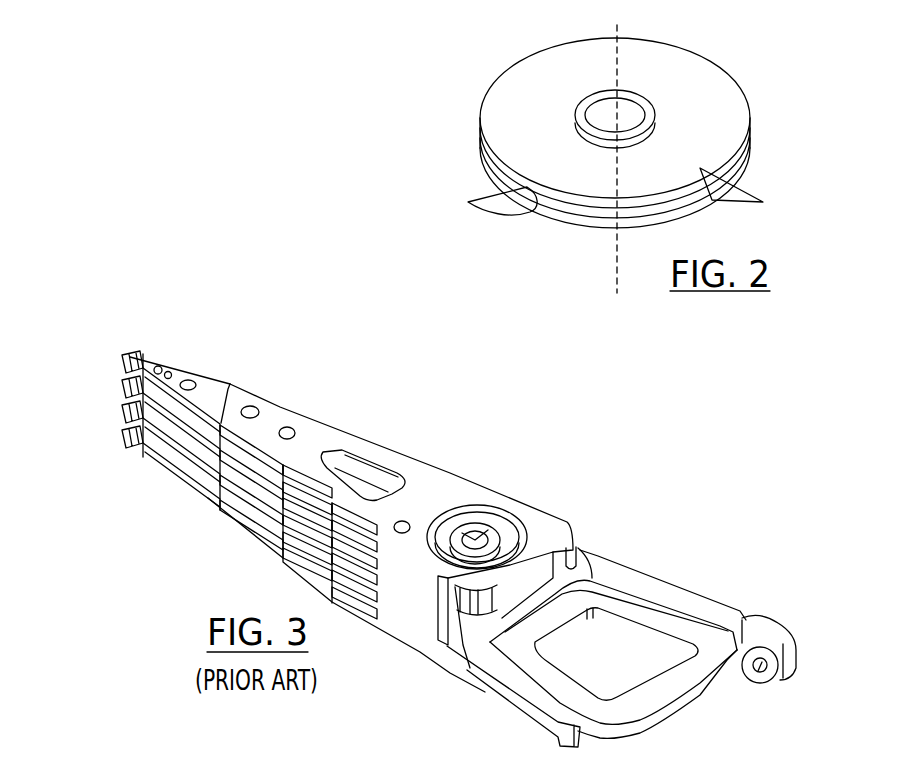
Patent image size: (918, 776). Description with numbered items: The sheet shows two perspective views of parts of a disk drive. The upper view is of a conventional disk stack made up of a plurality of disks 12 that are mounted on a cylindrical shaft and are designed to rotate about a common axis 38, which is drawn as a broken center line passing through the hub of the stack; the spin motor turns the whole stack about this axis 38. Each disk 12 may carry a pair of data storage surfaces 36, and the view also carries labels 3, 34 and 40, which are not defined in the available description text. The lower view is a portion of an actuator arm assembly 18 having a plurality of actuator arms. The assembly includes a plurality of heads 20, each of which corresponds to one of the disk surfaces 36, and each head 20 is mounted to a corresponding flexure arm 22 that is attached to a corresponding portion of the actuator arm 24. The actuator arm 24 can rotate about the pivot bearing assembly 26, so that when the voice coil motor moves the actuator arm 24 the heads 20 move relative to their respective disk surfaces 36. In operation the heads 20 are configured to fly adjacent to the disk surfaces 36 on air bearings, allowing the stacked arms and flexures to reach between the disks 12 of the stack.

In FIG. 2, the section line / hub center 3 is at (603, 112).
In FIG. 2, the disk 12 is at (727, 54).
In FIG. 2, the disk 34 is at (488, 203).
In FIG. 2, the data storage surface 36 is at (763, 202).
In FIG. 2, the axis 38 is at (618, 61).
In FIG. 2, the hub 40 is at (657, 117).
In FIG. 3, the actuator arm assembly 18 is at (613, 525).
In FIG. 3, the head 20 is at (125, 357).
In FIG. 3, the flexure arm 22 is at (183, 370).
In FIG. 3, the actuator arm 24 is at (312, 442).
In FIG. 3, the pivot bearing assembly 26 is at (477, 524).